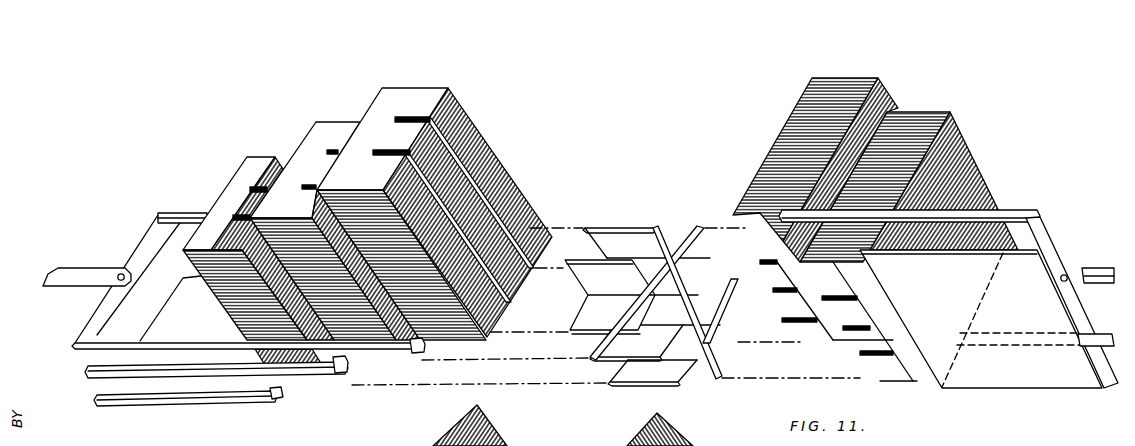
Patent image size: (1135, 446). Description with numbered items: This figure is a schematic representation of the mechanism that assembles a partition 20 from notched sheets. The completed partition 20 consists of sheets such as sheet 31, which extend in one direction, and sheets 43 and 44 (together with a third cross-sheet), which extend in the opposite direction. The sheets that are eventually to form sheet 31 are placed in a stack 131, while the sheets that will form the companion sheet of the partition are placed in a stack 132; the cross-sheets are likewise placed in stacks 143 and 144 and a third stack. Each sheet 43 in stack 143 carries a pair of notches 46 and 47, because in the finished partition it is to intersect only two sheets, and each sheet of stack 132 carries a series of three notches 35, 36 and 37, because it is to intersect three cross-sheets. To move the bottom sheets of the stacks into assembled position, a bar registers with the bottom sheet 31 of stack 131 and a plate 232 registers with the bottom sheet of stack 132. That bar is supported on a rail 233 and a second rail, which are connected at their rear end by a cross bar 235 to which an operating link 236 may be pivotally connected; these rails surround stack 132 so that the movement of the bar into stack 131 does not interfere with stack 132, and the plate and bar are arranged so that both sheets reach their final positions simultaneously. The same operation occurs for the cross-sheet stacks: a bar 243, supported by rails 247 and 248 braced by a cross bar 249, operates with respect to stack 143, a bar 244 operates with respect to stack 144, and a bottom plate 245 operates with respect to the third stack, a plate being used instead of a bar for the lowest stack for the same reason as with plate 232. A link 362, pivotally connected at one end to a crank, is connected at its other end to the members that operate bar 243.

The partition 20 is at (646, 299).
The sheet 31 is at (612, 226).
The notch 35 is at (782, 320).
The notch 36 is at (772, 291).
The notch 37 is at (759, 263).
The sheet 43 is at (428, 90).
The sheet 44 is at (331, 121).
The notch 46 is at (256, 192).
The notch 47 is at (240, 221).
The stack 131 is at (845, 78).
The stack 132 is at (921, 112).
The stack 143 is at (414, 75).
The stack 144 is at (315, 121).
The plate 232 is at (943, 295).
The rail 233 is at (1023, 211).
The cross bar 235 is at (1061, 257).
The operating link 236 is at (1109, 267).
The bar 243 is at (426, 344).
The bar 244 is at (350, 366).
The plate 245 is at (216, 339).
The rail 247 is at (120, 337).
The rail 248 is at (181, 217).
The cross bar 249 is at (144, 242).
The link 362 is at (69, 276).